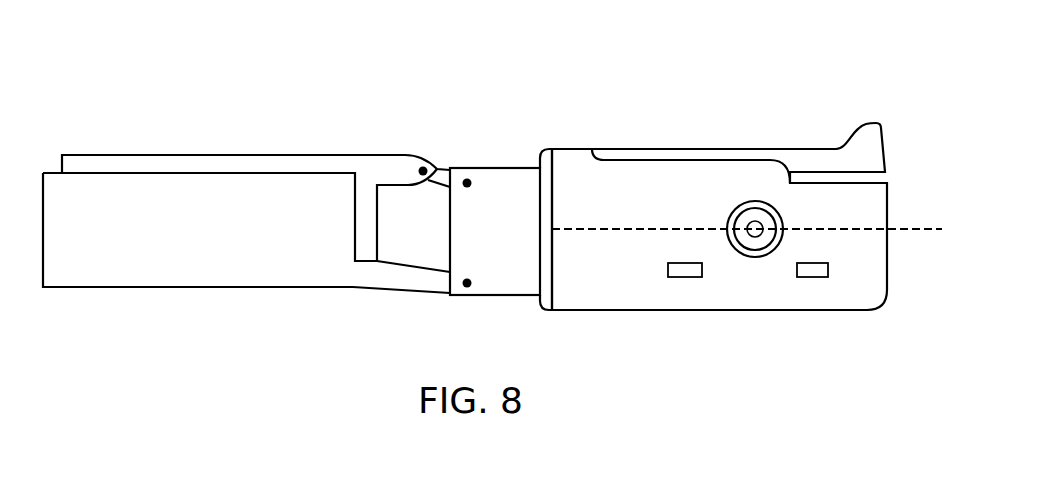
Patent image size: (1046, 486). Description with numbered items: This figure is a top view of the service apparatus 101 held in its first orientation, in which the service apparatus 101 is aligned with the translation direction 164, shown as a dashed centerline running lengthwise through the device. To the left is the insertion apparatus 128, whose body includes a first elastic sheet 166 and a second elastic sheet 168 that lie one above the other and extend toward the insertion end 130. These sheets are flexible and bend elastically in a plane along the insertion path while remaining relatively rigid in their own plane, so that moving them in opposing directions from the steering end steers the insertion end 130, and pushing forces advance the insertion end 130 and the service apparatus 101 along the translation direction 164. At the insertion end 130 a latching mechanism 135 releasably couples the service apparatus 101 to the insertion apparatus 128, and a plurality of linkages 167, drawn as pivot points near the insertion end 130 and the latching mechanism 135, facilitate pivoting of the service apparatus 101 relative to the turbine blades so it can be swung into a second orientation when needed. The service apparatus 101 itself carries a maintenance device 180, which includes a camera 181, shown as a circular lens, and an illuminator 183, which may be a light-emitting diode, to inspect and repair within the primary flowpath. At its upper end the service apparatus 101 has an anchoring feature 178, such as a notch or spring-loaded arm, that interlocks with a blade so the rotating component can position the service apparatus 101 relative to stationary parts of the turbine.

The service apparatus 101 is at (841, 80).
The insertion apparatus 128 is at (151, 102).
The insertion end 130 is at (381, 146).
The latching mechanism 135 is at (497, 167).
The translation direction 164 is at (918, 229).
The first elastic sheet 166 is at (210, 276).
The linkages 167 is at (466, 187).
The second elastic sheet 168 is at (262, 155).
The anchoring feature 178 is at (856, 128).
The maintenance device 180 is at (672, 174).
The camera 181 is at (750, 201).
The illuminator 183 is at (683, 277).